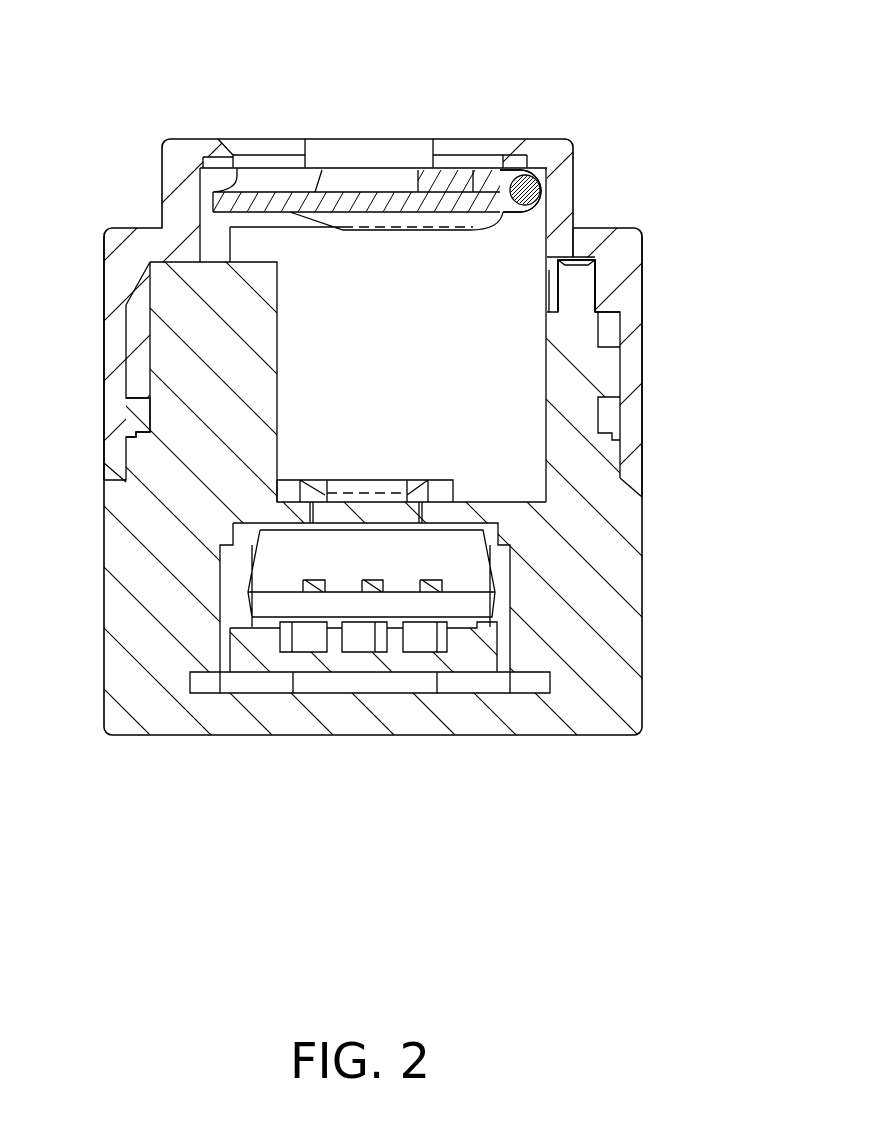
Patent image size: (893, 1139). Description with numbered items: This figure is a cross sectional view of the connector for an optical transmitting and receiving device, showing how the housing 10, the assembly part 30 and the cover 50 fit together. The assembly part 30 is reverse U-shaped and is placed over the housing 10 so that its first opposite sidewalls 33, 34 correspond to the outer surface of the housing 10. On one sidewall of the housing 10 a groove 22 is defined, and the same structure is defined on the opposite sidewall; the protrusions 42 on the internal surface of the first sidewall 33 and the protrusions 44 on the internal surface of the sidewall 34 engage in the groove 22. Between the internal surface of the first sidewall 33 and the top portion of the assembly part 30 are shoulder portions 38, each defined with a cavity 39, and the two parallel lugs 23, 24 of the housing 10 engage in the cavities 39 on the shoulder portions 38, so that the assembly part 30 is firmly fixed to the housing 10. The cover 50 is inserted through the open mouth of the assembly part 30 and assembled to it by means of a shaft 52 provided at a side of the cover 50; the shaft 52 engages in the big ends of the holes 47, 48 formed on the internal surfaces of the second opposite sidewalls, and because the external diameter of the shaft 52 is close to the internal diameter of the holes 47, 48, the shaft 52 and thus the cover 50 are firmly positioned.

The housing 10 is at (643, 590).
The groove 22 is at (143, 443).
The lug 23 is at (578, 279).
The lug 24 is at (578, 279).
The assembly part 30 is at (652, 213).
The first sidewall 33 is at (643, 365).
The first sidewall 34 is at (103, 345).
The shoulder portion 38 is at (595, 298).
The cavity 39 is at (578, 258).
The protrusion 42 is at (610, 415).
The protrusion 44 is at (148, 402).
The hole 47 is at (540, 188).
The hole 48 is at (540, 188).
The cover 50 is at (455, 165).
The shaft 52 is at (525, 175).